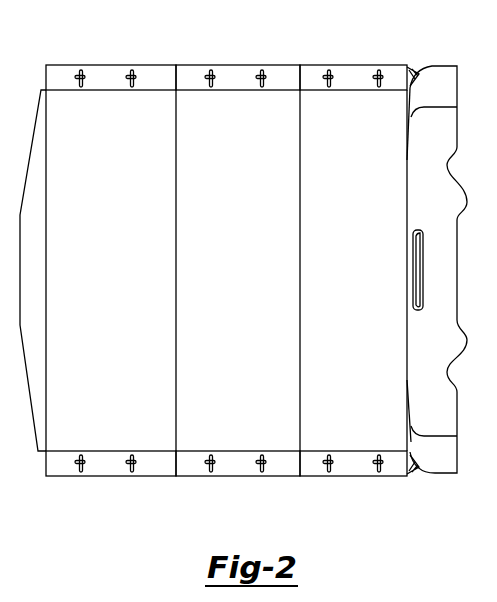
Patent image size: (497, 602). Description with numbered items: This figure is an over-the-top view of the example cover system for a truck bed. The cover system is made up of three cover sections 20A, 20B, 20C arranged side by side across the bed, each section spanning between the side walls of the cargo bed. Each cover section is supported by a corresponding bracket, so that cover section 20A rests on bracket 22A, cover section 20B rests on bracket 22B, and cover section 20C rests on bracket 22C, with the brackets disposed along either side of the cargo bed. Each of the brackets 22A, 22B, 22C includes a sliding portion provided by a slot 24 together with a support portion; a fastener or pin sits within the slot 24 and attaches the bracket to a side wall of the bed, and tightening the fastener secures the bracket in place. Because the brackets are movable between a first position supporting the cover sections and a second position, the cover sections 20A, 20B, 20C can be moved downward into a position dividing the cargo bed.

The cover section 20A is at (116, 248).
The cover section 20B is at (251, 247).
The cover section 20C is at (352, 245).
The bracket 22A is at (147, 65).
The bracket 22B is at (263, 65).
The bracket 22C is at (376, 65).
The slot 24 is at (379, 90).